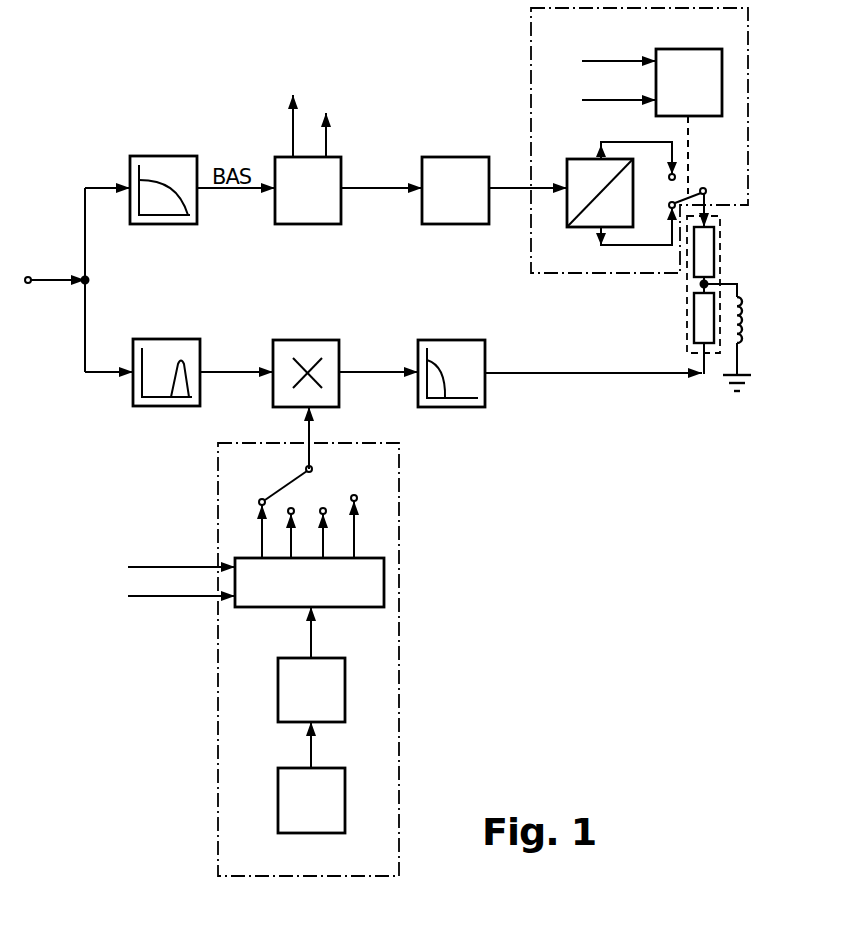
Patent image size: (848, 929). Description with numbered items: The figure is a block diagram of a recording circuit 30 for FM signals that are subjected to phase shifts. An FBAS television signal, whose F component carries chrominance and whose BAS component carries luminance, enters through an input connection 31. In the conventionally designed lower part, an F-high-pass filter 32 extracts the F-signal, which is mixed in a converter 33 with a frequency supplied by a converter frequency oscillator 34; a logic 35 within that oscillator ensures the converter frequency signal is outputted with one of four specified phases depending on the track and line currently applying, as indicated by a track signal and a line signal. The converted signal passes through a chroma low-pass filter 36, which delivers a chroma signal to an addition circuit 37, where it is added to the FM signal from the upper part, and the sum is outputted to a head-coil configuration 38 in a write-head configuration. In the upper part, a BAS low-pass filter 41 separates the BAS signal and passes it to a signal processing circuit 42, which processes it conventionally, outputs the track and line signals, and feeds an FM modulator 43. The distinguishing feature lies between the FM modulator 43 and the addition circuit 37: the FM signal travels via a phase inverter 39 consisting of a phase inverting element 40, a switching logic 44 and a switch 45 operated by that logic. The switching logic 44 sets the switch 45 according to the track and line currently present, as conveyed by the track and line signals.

The recording circuit 30 is at (562, 481).
The input connection 31 is at (27, 284).
The F-high-pass filter 32 is at (166, 340).
The converter 33 is at (306, 346).
The converter frequency oscillator 34 is at (398, 550).
The logic 35 is at (384, 588).
The chroma low-pass filter 36 is at (446, 348).
The addition circuit 37 is at (688, 290).
The head-coil configuration 38 is at (733, 345).
The phase inverter 39 is at (531, 60).
The phase inverting element 40 is at (581, 159).
The BAS low-pass filter 41 is at (172, 156).
The signal processing circuit 42 is at (281, 157).
The FM modulator 43 is at (466, 157).
The switching logic 44 is at (668, 57).
The switch 45 is at (698, 188).